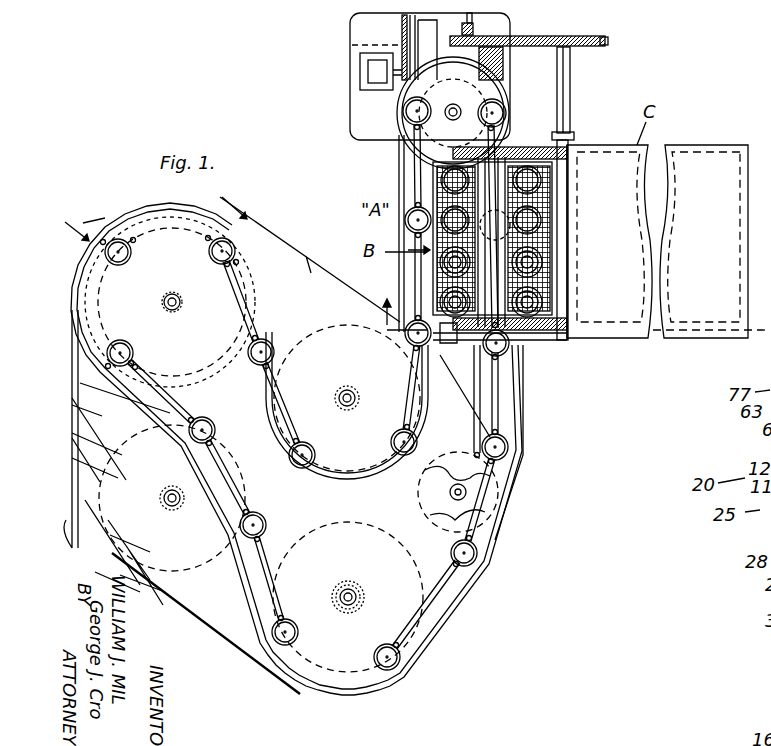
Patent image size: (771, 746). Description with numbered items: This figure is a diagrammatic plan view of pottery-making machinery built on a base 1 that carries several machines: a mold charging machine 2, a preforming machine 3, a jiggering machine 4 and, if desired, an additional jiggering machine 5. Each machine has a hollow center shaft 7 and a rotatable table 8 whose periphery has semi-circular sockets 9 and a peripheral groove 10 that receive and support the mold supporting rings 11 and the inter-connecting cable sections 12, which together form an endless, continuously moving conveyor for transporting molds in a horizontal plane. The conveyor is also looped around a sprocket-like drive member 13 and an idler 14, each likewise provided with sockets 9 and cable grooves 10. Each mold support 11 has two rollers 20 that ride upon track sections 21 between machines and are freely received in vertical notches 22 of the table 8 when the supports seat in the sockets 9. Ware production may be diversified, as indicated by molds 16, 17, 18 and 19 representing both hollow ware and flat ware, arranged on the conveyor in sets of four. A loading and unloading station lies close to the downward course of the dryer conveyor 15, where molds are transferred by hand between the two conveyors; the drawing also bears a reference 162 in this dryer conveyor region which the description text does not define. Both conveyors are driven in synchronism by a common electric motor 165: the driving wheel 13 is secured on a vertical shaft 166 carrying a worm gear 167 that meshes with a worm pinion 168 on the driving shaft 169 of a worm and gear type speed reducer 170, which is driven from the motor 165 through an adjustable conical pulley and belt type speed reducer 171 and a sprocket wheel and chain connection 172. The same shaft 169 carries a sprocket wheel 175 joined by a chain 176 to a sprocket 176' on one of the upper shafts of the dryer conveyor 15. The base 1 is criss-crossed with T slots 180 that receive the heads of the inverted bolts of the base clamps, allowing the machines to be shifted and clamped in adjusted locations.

The base 1 is at (310, 259).
The mold charging machine 2 is at (348, 583).
The preforming machine 3 is at (184, 494).
The jiggering machine 4 is at (150, 605).
The additional jiggering machine 5 is at (197, 282).
The hollow center shaft 7 is at (172, 310).
The rotatable table 8 is at (232, 292).
The semi-circular peripheral sockets 9 is at (403, 112).
The peripheral groove 10 is at (395, 173).
The mold supporting rings 11 is at (425, 118).
The inter-connecting cable sections 12 is at (412, 272).
The sprocket-like drive member 13 is at (433, 148).
The idler 14 is at (487, 487).
The dryer conveyor 15 is at (565, 140).
The mold 16 is at (529, 262).
The mold 17 is at (535, 303).
The mold 18 is at (529, 180).
The mold 19 is at (529, 220).
The rollers 20 is at (237, 530).
The track sections 21 is at (513, 383).
The vertical notches 22 is at (342, 496).
The roller frame 162 is at (563, 205).
The electric motor 165 is at (366, 73).
The vertical shaft 166 is at (448, 102).
The worm gear 167 is at (453, 114).
The worm pinion 168 is at (503, 78).
The driving shaft 169 is at (488, 22).
The worm and gear type speed reducer 170 is at (503, 58).
The conical pulley and belt type speed reducer 171 is at (402, 24).
The sprocket wheel and chain connection 172 is at (356, 44).
The sprocket wheel 175 is at (453, 113).
The chain 176 is at (533, 26).
The sprocket 176' is at (630, 39).
The T slots 180 is at (111, 494).